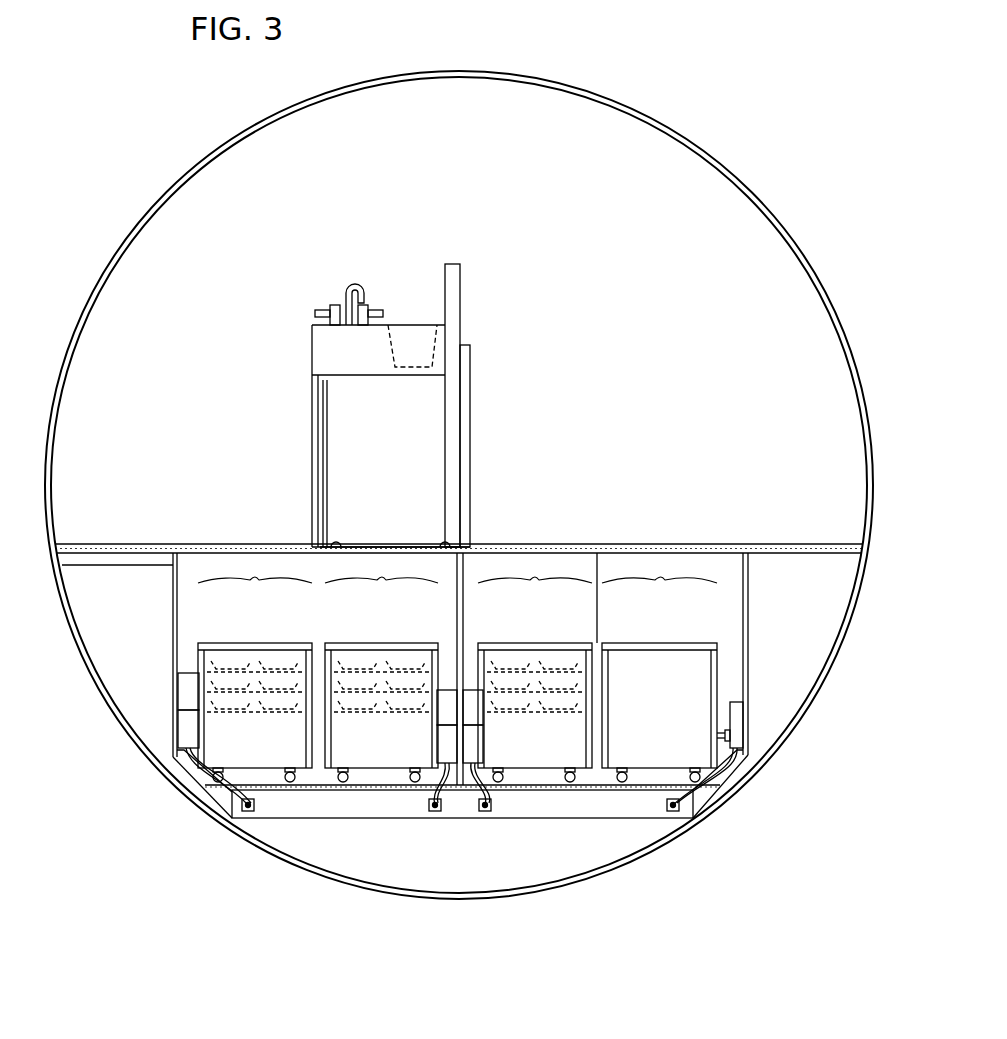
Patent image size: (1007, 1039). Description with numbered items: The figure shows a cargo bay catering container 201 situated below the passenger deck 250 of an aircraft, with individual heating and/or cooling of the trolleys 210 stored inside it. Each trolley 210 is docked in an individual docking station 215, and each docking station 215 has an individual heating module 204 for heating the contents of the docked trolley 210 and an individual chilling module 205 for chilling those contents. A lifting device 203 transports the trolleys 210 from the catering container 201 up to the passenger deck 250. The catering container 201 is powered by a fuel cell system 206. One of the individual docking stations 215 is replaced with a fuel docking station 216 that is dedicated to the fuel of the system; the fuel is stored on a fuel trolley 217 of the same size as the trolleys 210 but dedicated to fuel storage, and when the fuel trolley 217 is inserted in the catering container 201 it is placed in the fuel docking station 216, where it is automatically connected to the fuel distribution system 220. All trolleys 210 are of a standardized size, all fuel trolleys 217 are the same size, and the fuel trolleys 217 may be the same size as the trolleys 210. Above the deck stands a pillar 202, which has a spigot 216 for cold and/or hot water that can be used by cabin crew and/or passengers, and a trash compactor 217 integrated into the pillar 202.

The cargo bay catering container 201 is at (170, 598).
The pillar 202 is at (307, 450).
The lifting device 203 is at (366, 545).
The heating module 204 is at (177, 727).
The chilling module 205 is at (177, 688).
The fuel cell system 206 is at (585, 808).
The trolley 210 is at (230, 642).
The docking station 215 is at (395, 570).
The fuel docking station 216 is at (343, 295).
The fuel trolley 217 is at (412, 320).
The fuel distribution system 220 is at (737, 717).
The passenger deck 250 is at (712, 540).